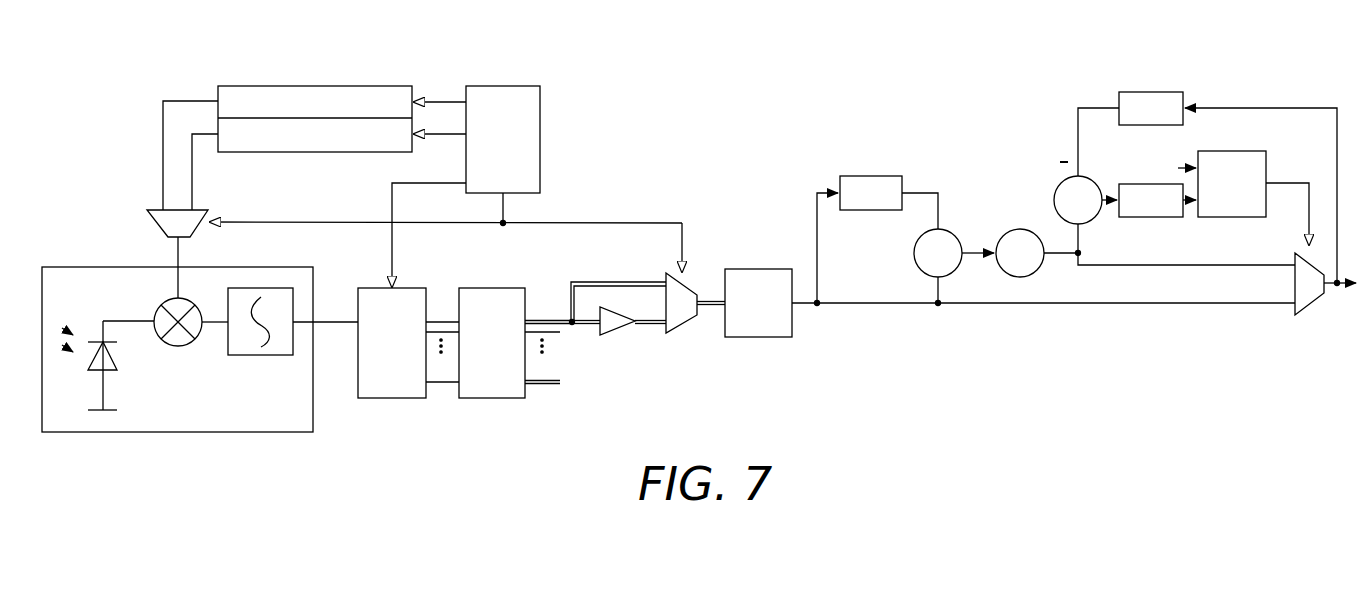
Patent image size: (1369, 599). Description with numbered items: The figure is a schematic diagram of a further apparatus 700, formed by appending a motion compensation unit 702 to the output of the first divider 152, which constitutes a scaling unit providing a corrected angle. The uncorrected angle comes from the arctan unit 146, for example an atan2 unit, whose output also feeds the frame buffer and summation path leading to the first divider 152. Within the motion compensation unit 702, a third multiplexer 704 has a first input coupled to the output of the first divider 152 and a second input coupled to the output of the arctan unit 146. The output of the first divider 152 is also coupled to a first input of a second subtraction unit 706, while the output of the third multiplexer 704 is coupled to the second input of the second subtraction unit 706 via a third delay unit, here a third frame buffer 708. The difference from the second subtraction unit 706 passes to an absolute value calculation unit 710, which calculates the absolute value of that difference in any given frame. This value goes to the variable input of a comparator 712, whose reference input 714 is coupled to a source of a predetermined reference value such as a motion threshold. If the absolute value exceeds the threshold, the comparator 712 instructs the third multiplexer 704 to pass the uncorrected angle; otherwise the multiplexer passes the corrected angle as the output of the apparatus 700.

The apparatus 700 is at (110, 84).
The arctan unit 146 is at (758, 303).
The first divider 152 is at (1016, 230).
The motion compensation unit 702 is at (1362, 369).
The third multiplexer 704 is at (1311, 312).
The second subtraction unit 706 is at (1059, 180).
The third frame buffer 708 is at (1151, 108).
The absolute value calculation unit 710 is at (1157, 200).
The comparator 712 is at (1253, 198).
The reference input 714 is at (1185, 162).